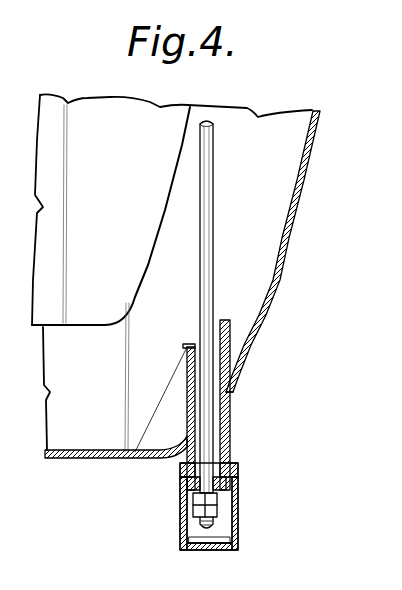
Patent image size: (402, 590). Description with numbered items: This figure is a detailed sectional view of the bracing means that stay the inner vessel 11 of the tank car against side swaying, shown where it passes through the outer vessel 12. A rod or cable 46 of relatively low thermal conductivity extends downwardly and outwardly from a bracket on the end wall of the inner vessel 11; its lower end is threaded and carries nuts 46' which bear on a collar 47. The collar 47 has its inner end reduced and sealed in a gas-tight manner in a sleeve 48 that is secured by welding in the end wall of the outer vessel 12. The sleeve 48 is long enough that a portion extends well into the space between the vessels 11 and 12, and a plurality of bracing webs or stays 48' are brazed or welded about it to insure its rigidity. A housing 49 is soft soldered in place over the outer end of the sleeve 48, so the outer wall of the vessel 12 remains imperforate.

The inner vessel 11 is at (150, 267).
The outer vessel 12 is at (296, 238).
The rod or cable 46 is at (230, 307).
The nuts 46' is at (241, 514).
The collar 47 is at (226, 490).
The sleeve 48 is at (236, 405).
The bracing webs or stays 48' is at (270, 349).
The housing 49 is at (217, 550).